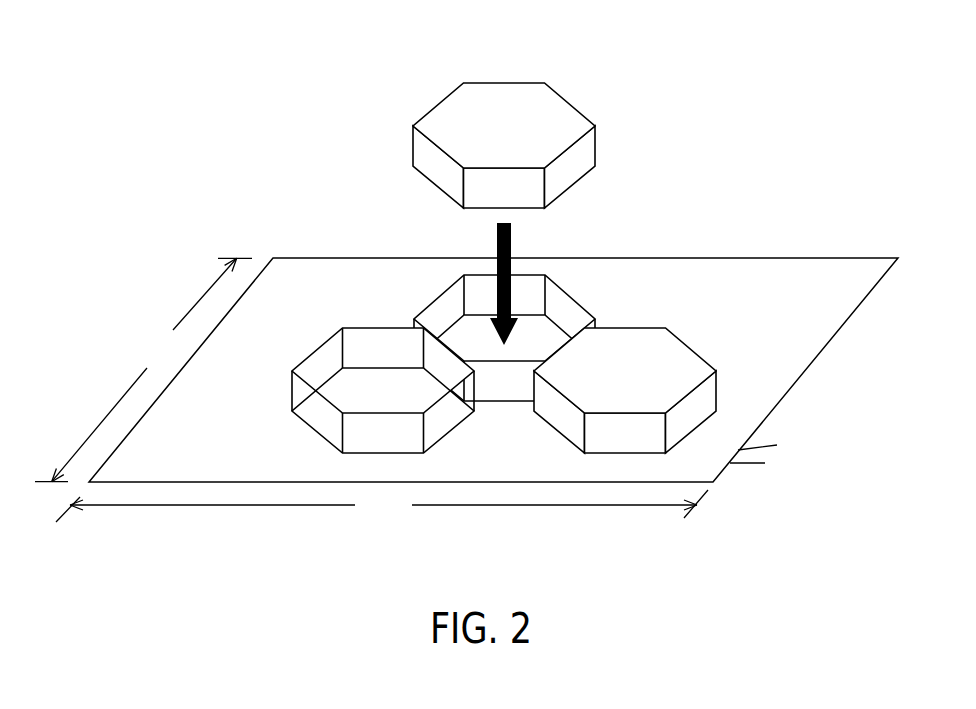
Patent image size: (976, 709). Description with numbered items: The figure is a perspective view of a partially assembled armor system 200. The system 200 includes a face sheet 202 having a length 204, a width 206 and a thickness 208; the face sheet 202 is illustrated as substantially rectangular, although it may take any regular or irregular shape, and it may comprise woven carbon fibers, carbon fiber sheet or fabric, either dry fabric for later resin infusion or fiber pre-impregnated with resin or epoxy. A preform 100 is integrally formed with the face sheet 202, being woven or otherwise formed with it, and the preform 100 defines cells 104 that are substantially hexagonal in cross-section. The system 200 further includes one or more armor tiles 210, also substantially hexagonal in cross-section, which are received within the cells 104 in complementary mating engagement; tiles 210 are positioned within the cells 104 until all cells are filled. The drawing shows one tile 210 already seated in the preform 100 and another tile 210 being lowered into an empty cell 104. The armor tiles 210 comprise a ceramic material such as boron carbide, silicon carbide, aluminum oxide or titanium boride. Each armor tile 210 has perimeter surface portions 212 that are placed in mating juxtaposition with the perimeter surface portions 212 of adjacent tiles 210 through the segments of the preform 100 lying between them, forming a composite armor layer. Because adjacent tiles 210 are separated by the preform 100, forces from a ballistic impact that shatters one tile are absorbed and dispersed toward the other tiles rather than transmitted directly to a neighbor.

The armor system 200 is at (698, 40).
The face sheet 202 is at (795, 280).
The length 204 is at (382, 505).
The width 206 is at (143, 369).
The thickness 208 is at (762, 453).
The armor tile 210 is at (542, 115).
The perimeter surface portion 212 is at (430, 160).
The preform 100 is at (373, 340).
The cell 104 is at (341, 381).